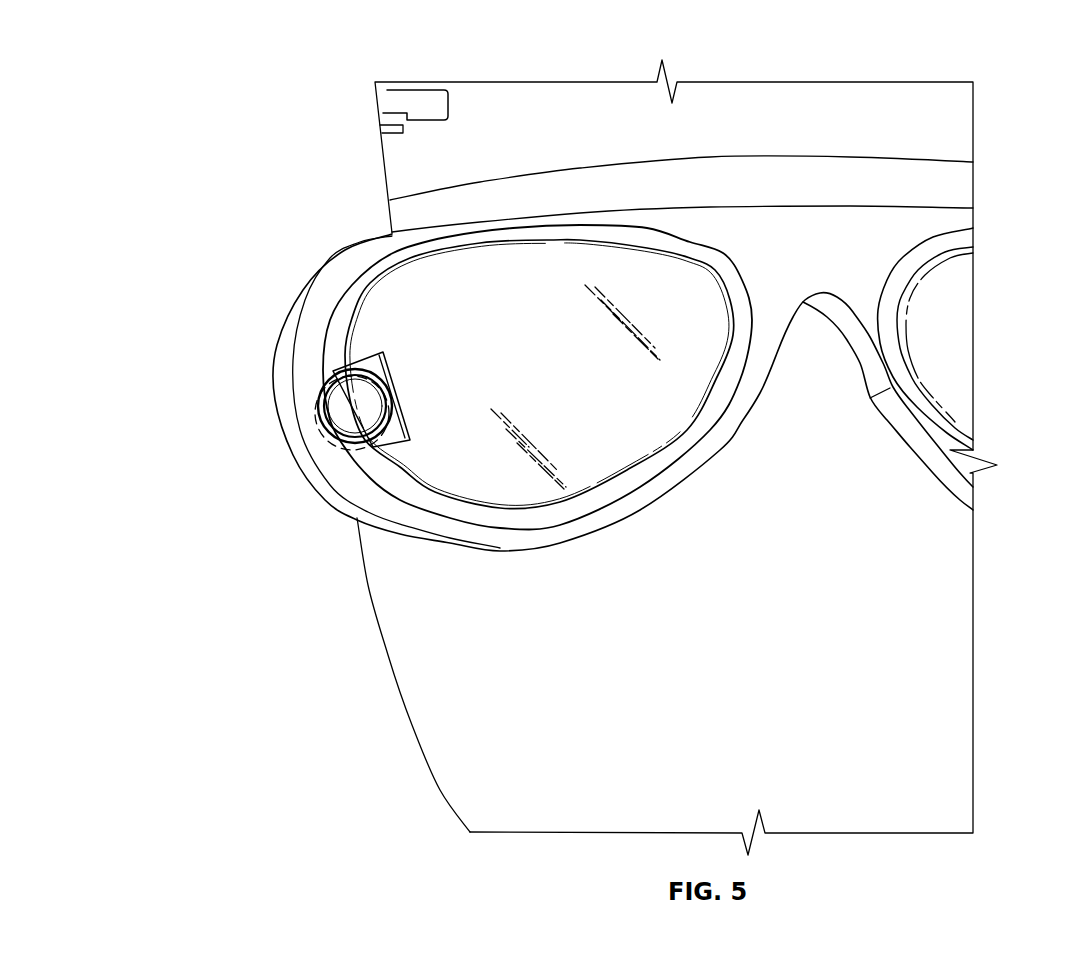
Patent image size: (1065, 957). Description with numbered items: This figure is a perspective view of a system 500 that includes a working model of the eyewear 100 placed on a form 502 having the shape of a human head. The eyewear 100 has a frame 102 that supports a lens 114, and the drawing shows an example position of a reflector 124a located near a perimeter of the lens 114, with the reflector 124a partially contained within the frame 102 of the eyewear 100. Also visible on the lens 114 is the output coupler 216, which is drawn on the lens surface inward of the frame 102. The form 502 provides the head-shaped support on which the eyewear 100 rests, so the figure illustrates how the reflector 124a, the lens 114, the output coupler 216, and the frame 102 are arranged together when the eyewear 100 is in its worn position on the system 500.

The system 500 is at (268, 46).
The eyewear 100 is at (960, 185).
The frame 102 is at (797, 242).
The output coupler 216 is at (653, 240).
The lens 114 is at (453, 465).
The reflector 124a is at (360, 408).
The form 502 is at (413, 640).